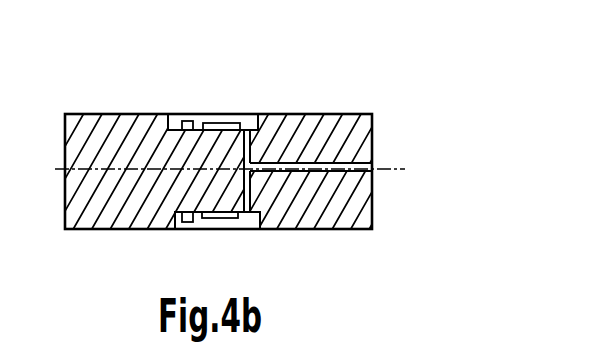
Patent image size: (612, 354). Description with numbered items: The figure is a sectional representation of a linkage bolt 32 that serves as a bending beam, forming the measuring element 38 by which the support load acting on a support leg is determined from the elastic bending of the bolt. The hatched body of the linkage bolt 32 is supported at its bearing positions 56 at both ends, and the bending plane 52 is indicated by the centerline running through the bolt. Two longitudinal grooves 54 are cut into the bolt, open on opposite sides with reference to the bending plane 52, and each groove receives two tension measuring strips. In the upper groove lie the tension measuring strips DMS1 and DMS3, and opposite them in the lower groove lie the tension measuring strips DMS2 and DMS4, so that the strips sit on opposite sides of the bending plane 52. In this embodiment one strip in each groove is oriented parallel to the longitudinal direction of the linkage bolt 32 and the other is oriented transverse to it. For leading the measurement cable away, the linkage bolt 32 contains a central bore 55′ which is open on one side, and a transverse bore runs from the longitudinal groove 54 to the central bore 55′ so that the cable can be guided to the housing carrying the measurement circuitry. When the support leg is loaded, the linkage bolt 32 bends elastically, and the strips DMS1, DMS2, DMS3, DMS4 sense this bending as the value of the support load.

The linkage bolt 32 is at (111, 207).
The measuring element 38 is at (134, 150).
The bending plane 52 is at (398, 169).
The longitudinal grooves 54 is at (257, 113).
The central bore 55′ is at (302, 163).
The bearing position 56 is at (75, 113).
The tension measuring strip DMS1 is at (225, 113).
The tension measuring strip DMS2 is at (232, 229).
The tension measuring strip DMS3 is at (187, 113).
The tension measuring strip DMS4 is at (181, 229).